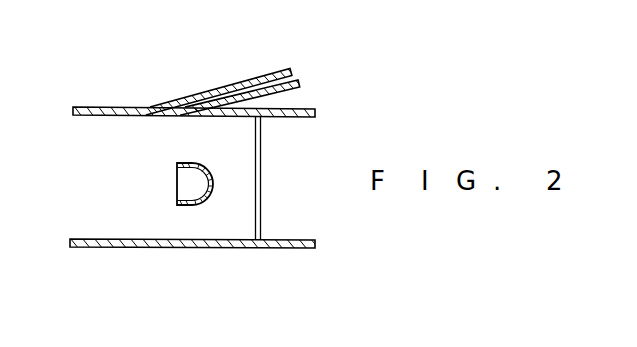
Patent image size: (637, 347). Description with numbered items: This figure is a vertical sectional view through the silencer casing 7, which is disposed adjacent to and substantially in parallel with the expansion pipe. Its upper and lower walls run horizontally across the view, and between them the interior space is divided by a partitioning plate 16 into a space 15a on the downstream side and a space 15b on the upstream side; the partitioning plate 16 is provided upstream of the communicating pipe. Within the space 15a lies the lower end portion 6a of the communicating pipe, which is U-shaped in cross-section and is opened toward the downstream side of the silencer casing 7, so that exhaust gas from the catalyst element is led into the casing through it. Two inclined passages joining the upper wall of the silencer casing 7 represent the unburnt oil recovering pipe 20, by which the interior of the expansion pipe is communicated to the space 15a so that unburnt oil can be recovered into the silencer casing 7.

The silencer casing 7 is at (97, 107).
The unburnt oil recovering pipe 20 is at (250, 78).
The lower end portion of the communicating pipe 6a is at (211, 164).
The partitioning plate 16 is at (262, 157).
The space 15a is at (137, 194).
The space 15b is at (325, 228).